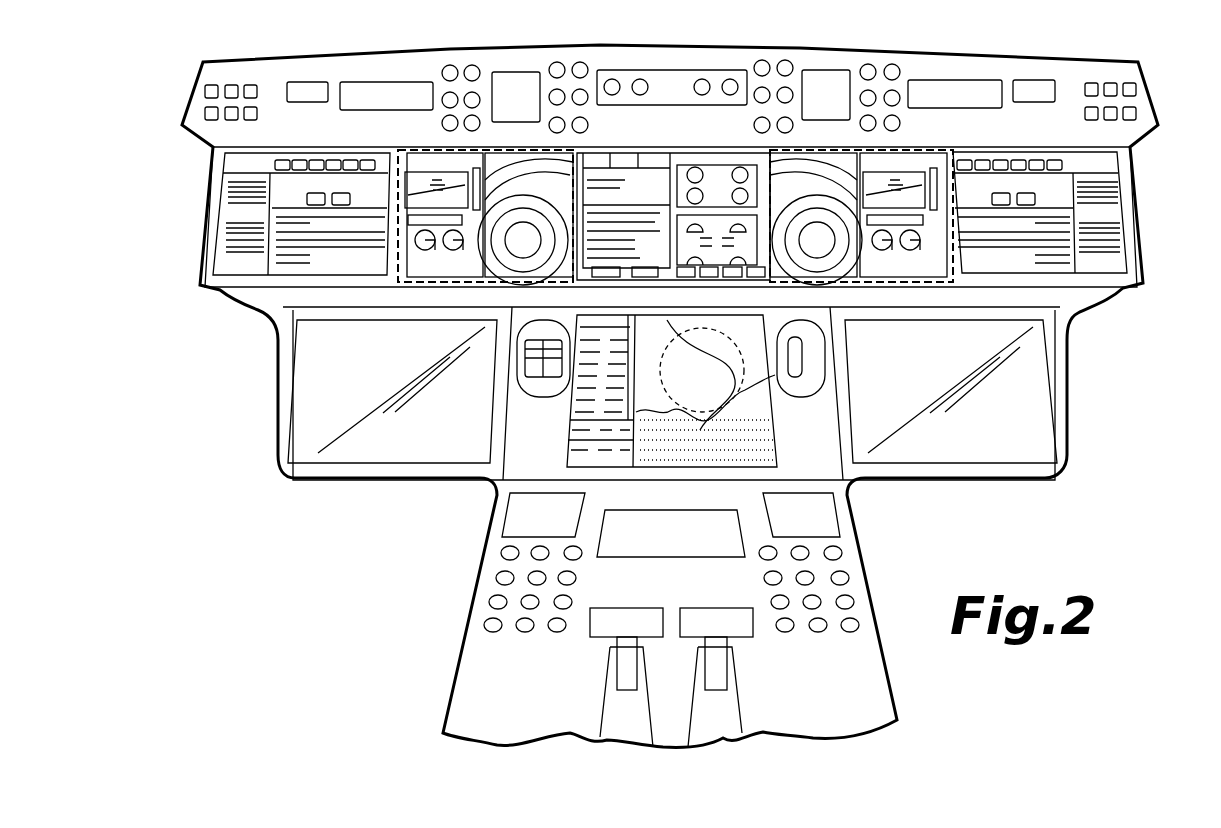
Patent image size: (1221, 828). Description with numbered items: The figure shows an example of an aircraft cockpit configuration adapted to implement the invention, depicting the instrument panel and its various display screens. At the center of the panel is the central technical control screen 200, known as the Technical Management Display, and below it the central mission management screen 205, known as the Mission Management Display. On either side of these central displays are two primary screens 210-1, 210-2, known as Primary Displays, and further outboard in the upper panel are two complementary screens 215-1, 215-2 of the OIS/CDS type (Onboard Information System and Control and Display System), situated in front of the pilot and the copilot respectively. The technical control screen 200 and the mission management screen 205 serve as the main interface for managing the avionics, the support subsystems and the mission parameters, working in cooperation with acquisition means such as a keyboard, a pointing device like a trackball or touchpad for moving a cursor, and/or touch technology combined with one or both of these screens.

The central technical control screen 200 is at (627, 148).
The central mission management screen 205 is at (778, 450).
The primary screen 210-1 is at (408, 280).
The primary screen 210-2 is at (887, 280).
The complementary screen 215-1 is at (218, 287).
The complementary screen 215-2 is at (1123, 287).